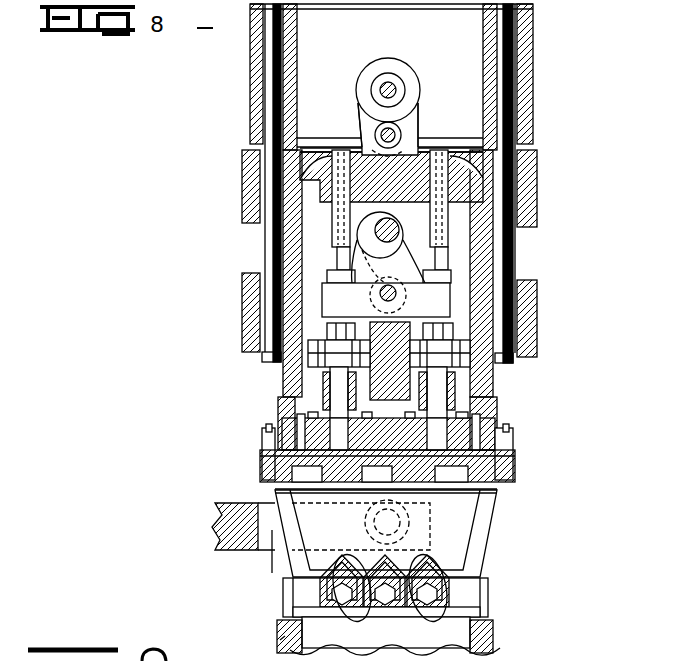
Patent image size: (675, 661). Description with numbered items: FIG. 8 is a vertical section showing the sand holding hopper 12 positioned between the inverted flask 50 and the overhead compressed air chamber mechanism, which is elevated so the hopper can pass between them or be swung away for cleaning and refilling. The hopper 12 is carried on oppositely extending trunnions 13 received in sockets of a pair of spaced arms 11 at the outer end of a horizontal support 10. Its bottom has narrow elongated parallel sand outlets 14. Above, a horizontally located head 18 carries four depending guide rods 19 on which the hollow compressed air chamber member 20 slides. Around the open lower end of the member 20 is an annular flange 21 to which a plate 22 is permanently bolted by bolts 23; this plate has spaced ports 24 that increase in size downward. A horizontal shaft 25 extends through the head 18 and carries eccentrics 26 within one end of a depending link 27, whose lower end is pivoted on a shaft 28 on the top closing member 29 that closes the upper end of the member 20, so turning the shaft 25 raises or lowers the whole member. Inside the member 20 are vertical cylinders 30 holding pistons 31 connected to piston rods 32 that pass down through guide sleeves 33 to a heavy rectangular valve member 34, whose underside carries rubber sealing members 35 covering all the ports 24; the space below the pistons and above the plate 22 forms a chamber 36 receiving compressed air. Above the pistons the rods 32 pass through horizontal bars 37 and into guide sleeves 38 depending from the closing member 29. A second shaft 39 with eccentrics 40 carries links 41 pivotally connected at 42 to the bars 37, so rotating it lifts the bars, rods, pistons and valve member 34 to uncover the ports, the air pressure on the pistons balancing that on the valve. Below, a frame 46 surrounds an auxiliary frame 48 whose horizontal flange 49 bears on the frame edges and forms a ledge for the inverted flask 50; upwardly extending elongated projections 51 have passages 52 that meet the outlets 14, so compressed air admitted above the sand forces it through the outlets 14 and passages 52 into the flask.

The projecting arms or supports 10 is at (236, 550).
The arms 11 is at (269, 558).
The sand holding hopper 12 is at (480, 523).
The trunnions 13 is at (410, 522).
The sand outlets 14 is at (342, 558).
The head 18 is at (535, 62).
The guide rods 19 is at (270, 233).
The compressed air chamber member 20 is at (495, 396).
The annular flange 21 is at (266, 441).
The plate 22 is at (515, 481).
The bolts 23 is at (262, 465).
The ports 24 is at (317, 482).
The horizontal shaft 25 is at (388, 90).
The eccentrics 26 is at (400, 83).
The depending link 27 is at (407, 108).
The shaft 28 is at (398, 135).
The top closing member 29 is at (358, 158).
The vertical cylinders 30 is at (327, 330).
The piston 31 is at (308, 350).
The piston rod 32 is at (323, 400).
The guide sleeve 33 is at (323, 378).
The valve member 34 is at (297, 420).
The sealing members 35 is at (262, 446).
The chamber 36 is at (480, 432).
The horizontal members or bars 37 is at (493, 296).
The guide sleeves 38 is at (283, 203).
The second shaft 39 is at (388, 247).
The eccentrics 40 is at (365, 232).
The links 41 is at (402, 262).
The pivotal connection 42 is at (380, 294).
The frame 46 is at (282, 640).
The auxiliary frame 48 is at (497, 648).
The horizontal flange 49 is at (497, 630).
The flask 50 is at (467, 612).
The elongated projections 51 is at (315, 590).
The passages 52 is at (389, 599).